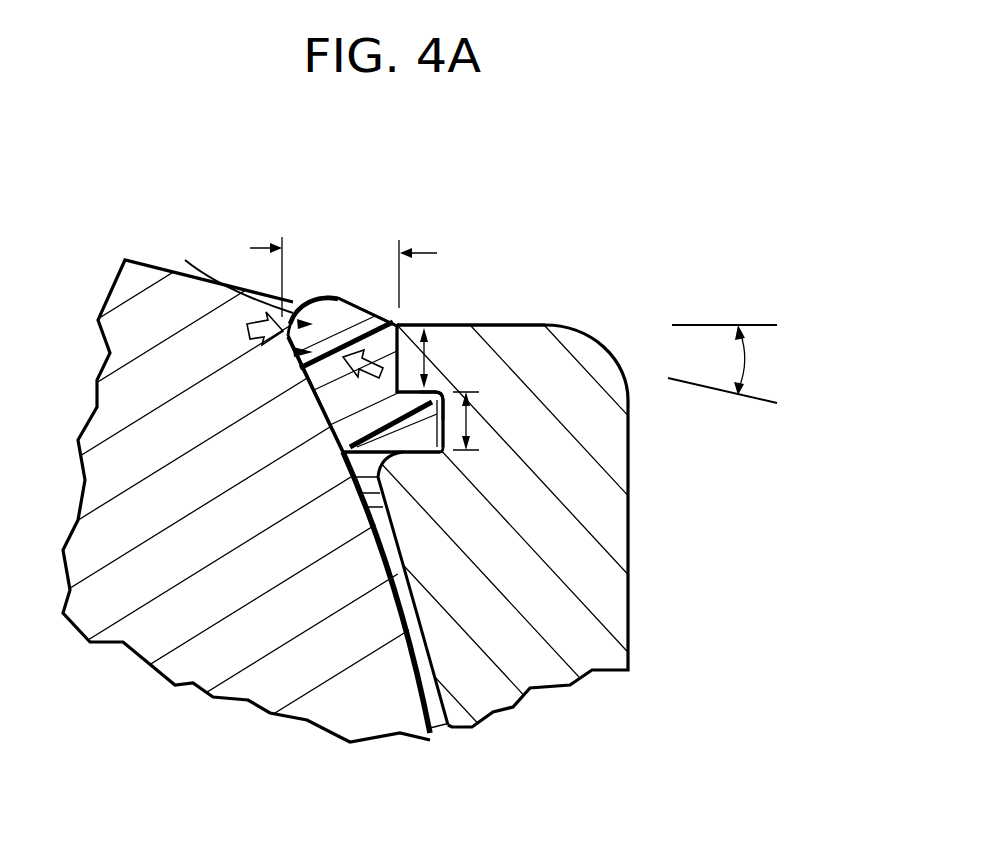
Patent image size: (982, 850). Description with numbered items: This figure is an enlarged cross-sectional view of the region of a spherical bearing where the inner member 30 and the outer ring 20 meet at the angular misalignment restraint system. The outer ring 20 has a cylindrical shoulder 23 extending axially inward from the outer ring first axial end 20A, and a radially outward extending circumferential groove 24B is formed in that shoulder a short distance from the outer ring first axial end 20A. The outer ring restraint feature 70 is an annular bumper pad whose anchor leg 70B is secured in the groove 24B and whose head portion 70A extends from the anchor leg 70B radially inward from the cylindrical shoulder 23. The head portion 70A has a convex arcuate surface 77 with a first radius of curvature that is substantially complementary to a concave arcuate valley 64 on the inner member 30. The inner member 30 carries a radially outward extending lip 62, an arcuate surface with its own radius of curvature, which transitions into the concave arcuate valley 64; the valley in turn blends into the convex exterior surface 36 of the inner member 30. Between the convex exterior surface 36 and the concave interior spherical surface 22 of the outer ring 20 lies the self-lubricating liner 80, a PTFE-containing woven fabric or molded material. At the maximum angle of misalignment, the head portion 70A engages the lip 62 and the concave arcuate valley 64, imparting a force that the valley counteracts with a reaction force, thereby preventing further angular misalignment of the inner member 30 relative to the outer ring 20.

The outer ring 20 is at (565, 637).
The outer ring first axial end 20A is at (525, 323).
The concave interior spherical surface 22 is at (408, 695).
The cylindrical shoulder 23 is at (381, 466).
The radially outward extending circumferential groove 24B is at (447, 458).
The inner member 30 is at (213, 678).
The convex exterior surface 36 is at (479, 690).
The lip 62 is at (300, 312).
The concave arcuate valley 64 is at (329, 410).
The outer ring restraint feature 70 is at (408, 368).
The head portion 70A is at (343, 298).
The anchor leg 70B is at (436, 456).
The convex arcuate surface 77 is at (231, 269).
The self-lubricating liner 80 is at (440, 722).